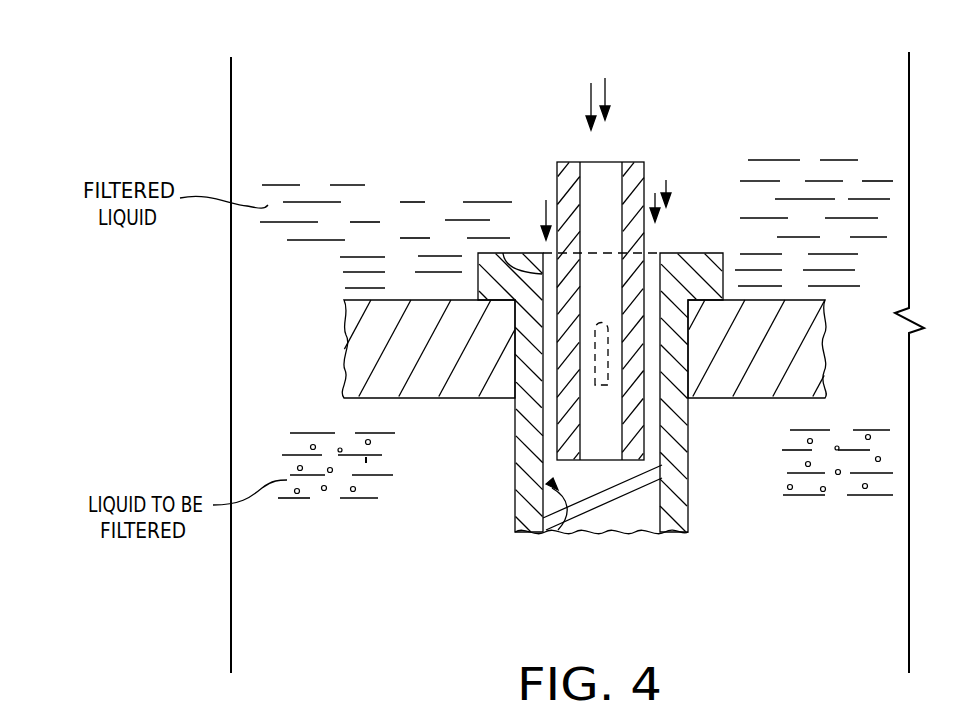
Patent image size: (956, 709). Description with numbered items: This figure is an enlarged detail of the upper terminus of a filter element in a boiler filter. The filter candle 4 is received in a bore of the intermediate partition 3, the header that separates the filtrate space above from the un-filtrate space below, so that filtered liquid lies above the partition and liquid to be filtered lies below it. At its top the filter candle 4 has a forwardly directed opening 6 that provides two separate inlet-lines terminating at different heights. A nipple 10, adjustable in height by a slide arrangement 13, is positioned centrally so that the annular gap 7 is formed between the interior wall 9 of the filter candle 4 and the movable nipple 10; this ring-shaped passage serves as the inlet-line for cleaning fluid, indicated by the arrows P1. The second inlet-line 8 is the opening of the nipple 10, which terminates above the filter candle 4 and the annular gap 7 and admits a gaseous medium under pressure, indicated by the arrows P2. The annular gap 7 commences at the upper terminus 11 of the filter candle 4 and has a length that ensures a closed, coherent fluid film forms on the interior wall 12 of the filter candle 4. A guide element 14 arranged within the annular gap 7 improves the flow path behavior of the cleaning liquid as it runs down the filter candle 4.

The intermediate partition 3 is at (731, 373).
The filter candle 4 is at (512, 378).
The forwardly directed opening 6 is at (543, 251).
The annular gap 7 is at (652, 251).
The second inlet-line 8 is at (603, 162).
The interior wall 9 is at (503, 254).
The nipple 10 is at (645, 182).
The upper terminus 11 is at (683, 253).
The interior wall 12 is at (557, 530).
The slide arrangement 13 is at (600, 388).
The guide element 14 is at (605, 510).
The arrows for cleaning fluid P1 is at (703, 170).
The arrows for gaseous medium P2 is at (607, 90).